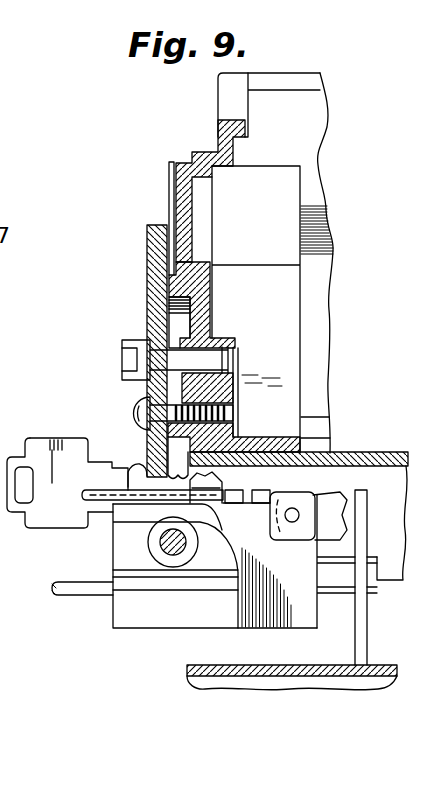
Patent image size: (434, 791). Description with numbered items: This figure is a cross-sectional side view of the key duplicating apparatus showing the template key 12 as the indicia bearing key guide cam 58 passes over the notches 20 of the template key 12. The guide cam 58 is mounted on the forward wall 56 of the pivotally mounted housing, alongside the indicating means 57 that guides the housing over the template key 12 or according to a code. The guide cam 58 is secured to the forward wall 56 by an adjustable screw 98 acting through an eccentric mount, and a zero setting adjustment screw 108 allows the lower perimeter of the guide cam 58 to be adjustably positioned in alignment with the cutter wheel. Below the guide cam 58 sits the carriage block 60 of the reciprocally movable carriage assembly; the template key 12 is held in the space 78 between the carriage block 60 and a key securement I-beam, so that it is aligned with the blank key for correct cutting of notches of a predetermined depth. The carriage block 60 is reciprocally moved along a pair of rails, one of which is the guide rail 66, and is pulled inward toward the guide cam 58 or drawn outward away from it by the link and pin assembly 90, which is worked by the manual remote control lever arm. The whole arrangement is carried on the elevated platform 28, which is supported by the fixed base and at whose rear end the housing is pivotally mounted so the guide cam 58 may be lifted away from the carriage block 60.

The indicating means 57 is at (138, 200).
The forward wall 56 is at (174, 183).
The indicia bearing key guide cam 58 is at (152, 248).
The adjustable screw 98 is at (133, 348).
The zero setting adjustment screw 108 is at (137, 402).
The space 78 is at (135, 467).
The template key 12 is at (52, 514).
The notches 20 is at (200, 505).
The link and pin assembly 90 is at (332, 490).
The carriage block 60 is at (145, 608).
The guide rail 66 is at (75, 583).
The platform 28 is at (298, 670).